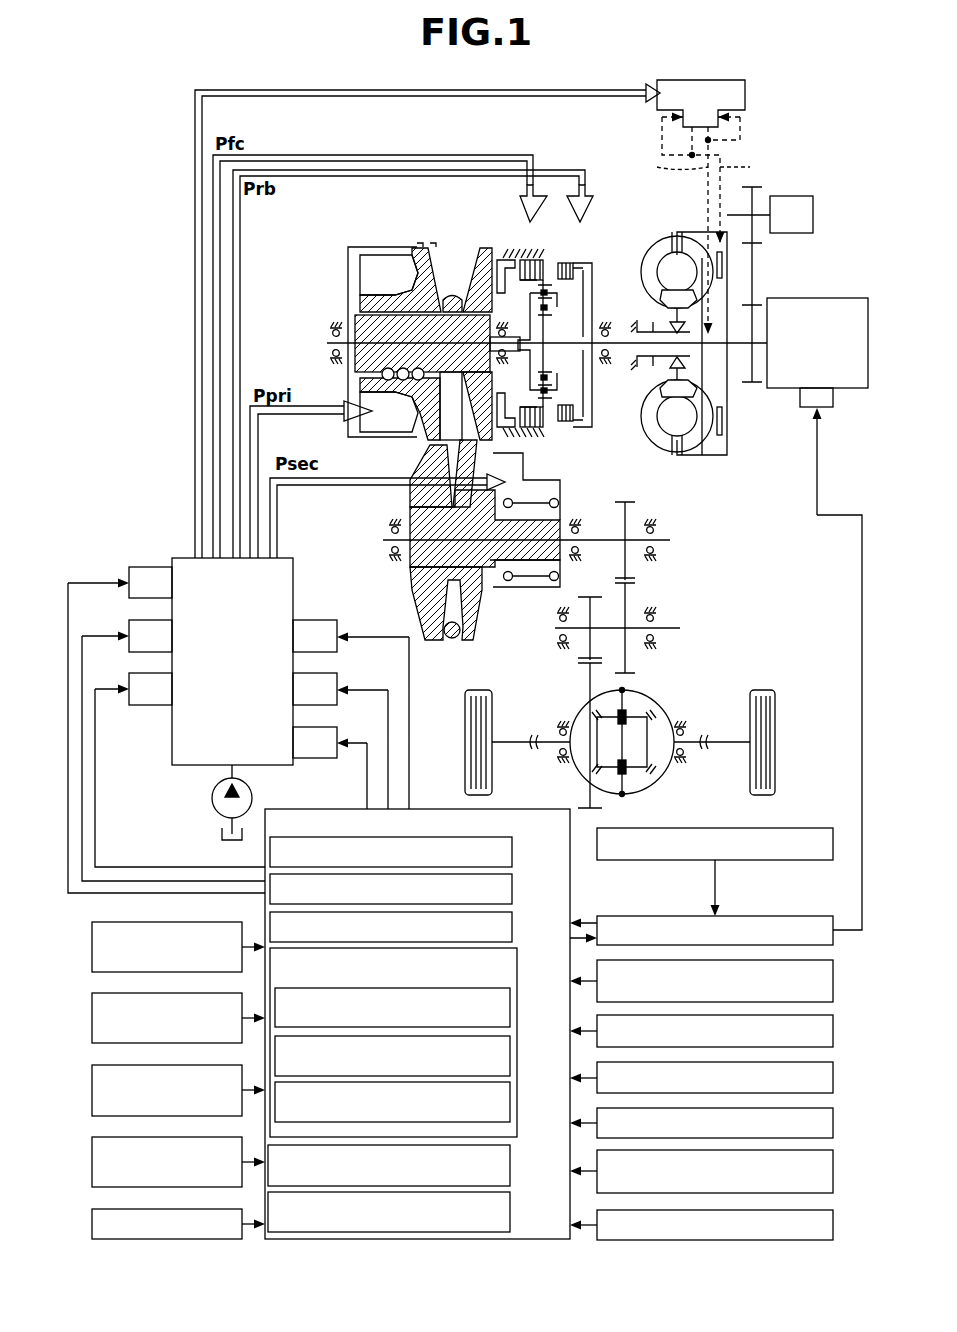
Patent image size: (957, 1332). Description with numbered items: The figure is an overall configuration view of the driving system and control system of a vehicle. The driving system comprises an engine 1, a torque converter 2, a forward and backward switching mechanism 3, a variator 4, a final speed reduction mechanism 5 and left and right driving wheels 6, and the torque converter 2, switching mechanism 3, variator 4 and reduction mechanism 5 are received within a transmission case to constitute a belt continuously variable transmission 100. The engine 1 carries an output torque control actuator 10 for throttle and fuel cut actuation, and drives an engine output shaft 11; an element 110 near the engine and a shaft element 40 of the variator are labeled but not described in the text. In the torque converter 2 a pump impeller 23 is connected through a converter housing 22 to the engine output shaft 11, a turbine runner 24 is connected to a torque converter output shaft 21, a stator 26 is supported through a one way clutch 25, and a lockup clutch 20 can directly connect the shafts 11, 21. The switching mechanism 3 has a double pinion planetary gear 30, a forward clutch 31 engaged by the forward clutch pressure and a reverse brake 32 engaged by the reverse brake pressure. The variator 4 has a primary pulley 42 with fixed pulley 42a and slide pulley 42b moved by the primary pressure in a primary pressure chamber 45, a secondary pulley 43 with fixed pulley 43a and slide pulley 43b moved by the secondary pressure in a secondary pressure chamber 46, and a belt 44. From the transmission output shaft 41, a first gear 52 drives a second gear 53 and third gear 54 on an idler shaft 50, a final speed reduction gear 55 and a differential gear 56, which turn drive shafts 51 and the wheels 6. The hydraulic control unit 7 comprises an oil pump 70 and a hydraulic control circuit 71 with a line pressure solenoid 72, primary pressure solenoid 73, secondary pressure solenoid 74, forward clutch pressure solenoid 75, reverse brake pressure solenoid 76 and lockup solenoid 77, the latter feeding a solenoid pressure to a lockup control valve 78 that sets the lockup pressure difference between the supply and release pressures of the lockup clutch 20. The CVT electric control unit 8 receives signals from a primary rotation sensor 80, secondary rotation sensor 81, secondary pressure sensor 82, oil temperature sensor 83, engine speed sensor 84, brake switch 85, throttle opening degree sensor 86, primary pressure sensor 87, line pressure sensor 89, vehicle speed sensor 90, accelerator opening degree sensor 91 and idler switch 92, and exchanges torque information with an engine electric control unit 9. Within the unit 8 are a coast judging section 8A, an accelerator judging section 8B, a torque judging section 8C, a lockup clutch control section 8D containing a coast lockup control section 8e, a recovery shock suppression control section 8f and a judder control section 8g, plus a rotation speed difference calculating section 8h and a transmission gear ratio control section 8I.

The engine 1 is at (818, 298).
The output torque control actuator 10 is at (833, 400).
The engine output shaft 11 is at (740, 350).
The engine speed sensor gear 110 is at (808, 185).
The torque converter 2 is at (694, 335).
The lockup clutch 20 is at (727, 297).
The torque converter output shaft 21 is at (622, 350).
The converter housing 22 is at (688, 232).
The pump impeller 23 is at (656, 254).
The turbine runner 24 is at (697, 440).
The one way clutch 25 is at (668, 322).
The stator 26 is at (677, 297).
The forward and backward switching mechanism 3 is at (542, 331).
The double pinion planetary gear 30 is at (550, 407).
The forward clutch 31 is at (573, 263).
The reverse brake 32 is at (522, 258).
The variator 4 is at (399, 318).
The primary shaft 40 is at (400, 343).
The transmission output shaft 41 is at (593, 528).
The primary pulley 42 is at (362, 320).
The fixed pulley 42a is at (484, 262).
The slide pulley 42b is at (436, 250).
The secondary pulley 43 is at (450, 566).
The fixed pulley 43a is at (427, 616).
The slide pulley 43b is at (463, 638).
The belt 44 is at (445, 465).
The primary pressure chamber 45 is at (372, 258).
The secondary pressure chamber 46 is at (488, 620).
The final speed reduction mechanism 5 is at (625, 647).
The idler shaft 50 is at (627, 632).
The drive shafts 51 is at (515, 748).
The first gear 52 is at (627, 522).
The second gear 53 is at (627, 594).
The third gear 54 is at (587, 613).
The final speed reduction gear 55 is at (590, 688).
The differential gear 56 is at (665, 708).
The driving wheels 6 is at (465, 742).
The hydraulic control unit 7 is at (233, 663).
The oil pump 70 is at (212, 798).
The hydraulic control circuit 71 is at (172, 753).
The line pressure solenoid 72 is at (318, 760).
The primary pressure solenoid 73 is at (318, 707).
The secondary pressure solenoid 74 is at (318, 654).
The forward clutch pressure solenoid 75 is at (150, 706).
The reverse brake pressure solenoid 76 is at (150, 654).
The lockup solenoid 77 is at (150, 600).
The lockup control valve 78 is at (745, 100).
The CVT electric control unit 8 is at (417, 997).
The coast judging section 8A is at (512, 852).
The accelerator judging section 8B is at (512, 889).
The torque judging section 8C is at (512, 927).
The lockup clutch control section 8D is at (517, 965).
The coast lockup control section 8e is at (510, 1007).
The recovery shock suppression control section 8f is at (510, 1056).
The judder control section 8g is at (510, 1100).
The rotation speed difference calculating section 8h is at (510, 1164).
The transmission gear ratio control section 8I is at (510, 1212).
The primary rotation sensor 80 is at (92, 947).
The secondary rotation sensor 81 is at (92, 1018).
The secondary pressure sensor 82 is at (92, 1090).
The oil temperature sensor 83 is at (92, 1162).
The engine speed sensor 84 is at (800, 827).
The brake switch 85 is at (92, 1224).
The throttle opening degree sensor 86 is at (833, 981).
The primary pressure sensor 87 is at (833, 1031).
The line pressure sensor 89 is at (833, 1078).
The engine electric control unit 9 is at (798, 916).
The vehicle speed sensor 90 is at (833, 1123).
The accelerator opening degree sensor 91 is at (833, 1171).
The idler switch 92 is at (833, 1225).
The belt continuously variable transmission 100 is at (722, 516).